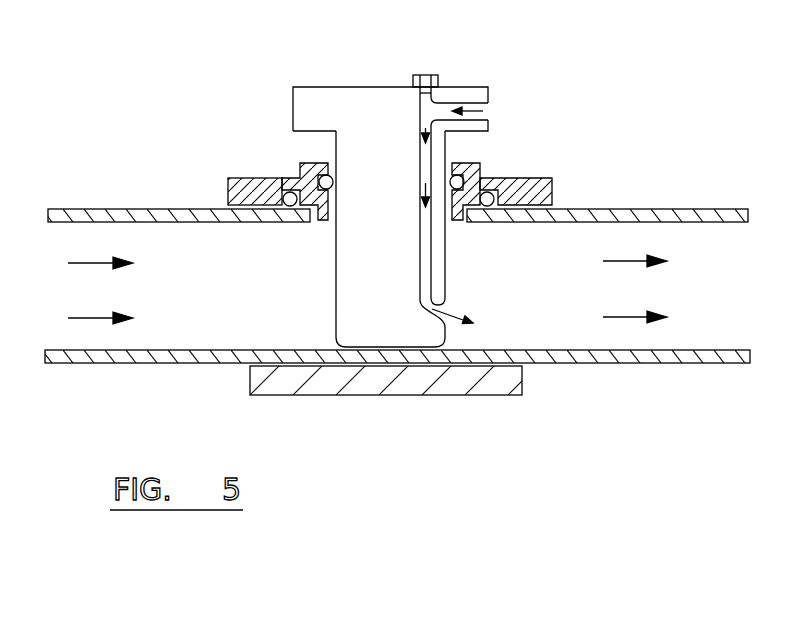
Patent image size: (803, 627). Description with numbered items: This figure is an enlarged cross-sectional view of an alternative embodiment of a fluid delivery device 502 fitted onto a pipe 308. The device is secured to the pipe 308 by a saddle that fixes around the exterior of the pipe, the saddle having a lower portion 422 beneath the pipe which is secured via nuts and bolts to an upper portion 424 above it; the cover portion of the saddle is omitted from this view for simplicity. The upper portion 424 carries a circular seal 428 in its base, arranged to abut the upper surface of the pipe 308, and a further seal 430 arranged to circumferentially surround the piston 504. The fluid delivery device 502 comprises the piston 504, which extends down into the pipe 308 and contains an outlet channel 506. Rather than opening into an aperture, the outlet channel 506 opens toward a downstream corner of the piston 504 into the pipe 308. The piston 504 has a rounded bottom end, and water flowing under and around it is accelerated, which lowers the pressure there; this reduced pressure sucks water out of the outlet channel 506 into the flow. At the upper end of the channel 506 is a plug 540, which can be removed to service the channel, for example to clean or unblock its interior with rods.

The fluid delivery device 502 is at (588, 124).
The piston 504 is at (394, 234).
The outlet channel 506 is at (427, 157).
The plug 540 is at (430, 75).
The circular seal 428 is at (280, 183).
The further seal 430 is at (478, 167).
The upper portion 424 is at (553, 193).
The pipe 308 is at (140, 364).
The lower portion 422 is at (440, 383).